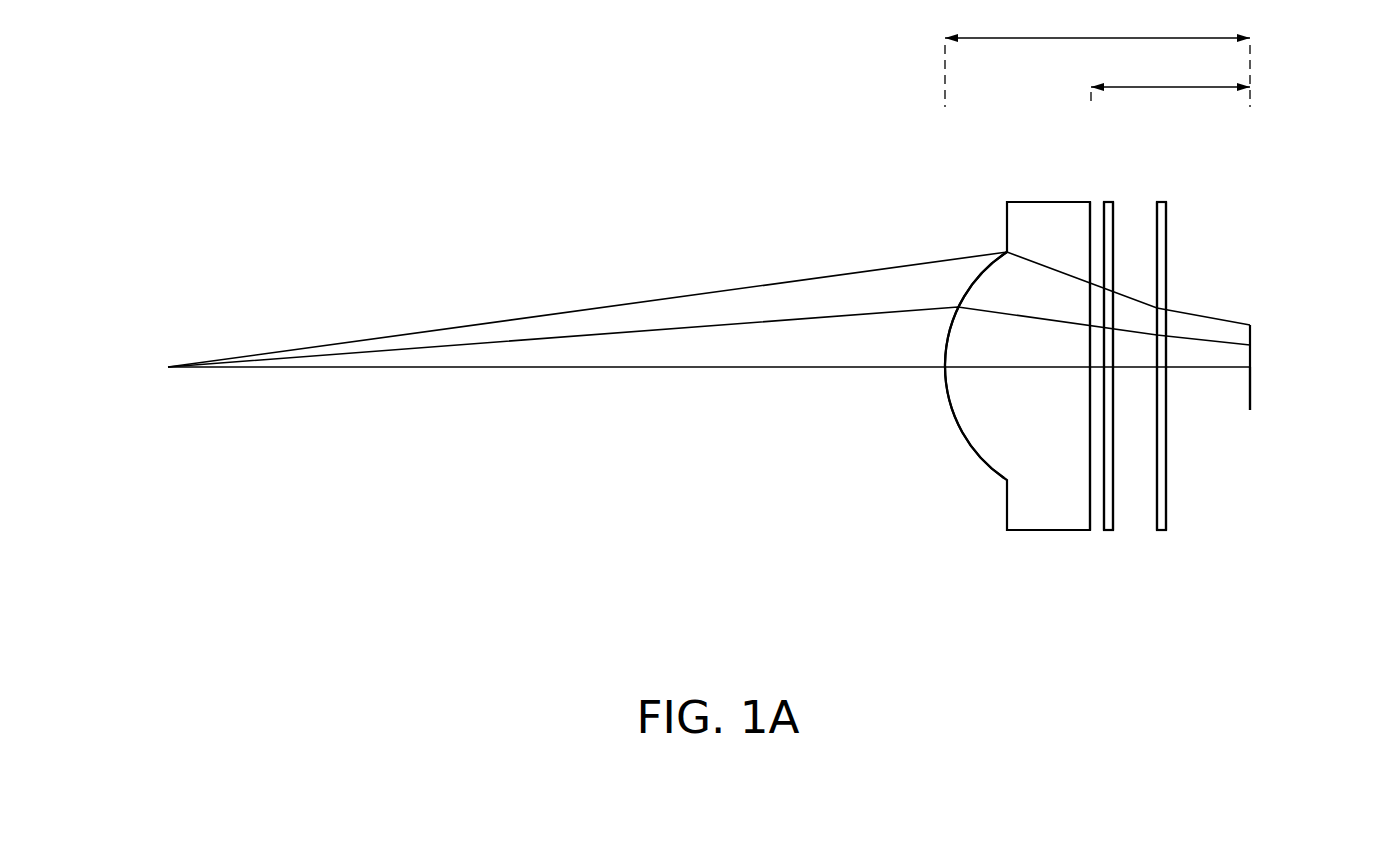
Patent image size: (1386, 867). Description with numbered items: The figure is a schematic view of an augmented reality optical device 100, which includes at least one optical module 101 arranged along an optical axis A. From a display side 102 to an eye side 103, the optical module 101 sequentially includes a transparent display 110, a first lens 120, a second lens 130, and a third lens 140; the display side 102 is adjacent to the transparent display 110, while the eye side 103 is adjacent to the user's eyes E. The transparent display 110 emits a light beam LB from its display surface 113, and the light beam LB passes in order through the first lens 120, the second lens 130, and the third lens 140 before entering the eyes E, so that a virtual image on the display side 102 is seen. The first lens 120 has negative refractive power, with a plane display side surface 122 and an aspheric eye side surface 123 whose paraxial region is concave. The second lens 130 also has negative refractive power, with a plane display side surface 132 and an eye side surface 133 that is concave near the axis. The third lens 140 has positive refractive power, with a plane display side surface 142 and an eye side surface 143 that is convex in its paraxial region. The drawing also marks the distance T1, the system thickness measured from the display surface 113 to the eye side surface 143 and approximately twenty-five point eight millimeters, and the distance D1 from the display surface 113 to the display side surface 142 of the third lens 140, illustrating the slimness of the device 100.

The AR optical device 100 is at (1334, 653).
The optical module 101 is at (1310, 187).
The display side 102 is at (1375, 372).
The eye side 103 is at (128, 372).
The transparent display 110 is at (1250, 325).
The display surface 113 is at (1248, 390).
The first lens 120 is at (1161, 210).
The display side surface of the first lens 122 is at (1167, 385).
The eye side surface of the first lens 123 is at (1157, 385).
The second lens 130 is at (1108, 210).
The display side surface of the second lens 132 is at (1113, 470).
The eye side surface of the second lens 133 is at (1092, 512).
The third lens 140 is at (1038, 218).
The display side surface of the third lens 142 is at (1102, 470).
The eye side surface of the third lens 143 is at (953, 418).
The eyes E is at (168, 360).
The light beam LB is at (650, 298).
The optical axis A is at (500, 370).
The distance (system thickness) T1 is at (1097, 55).
The distance D1 is at (1170, 80).